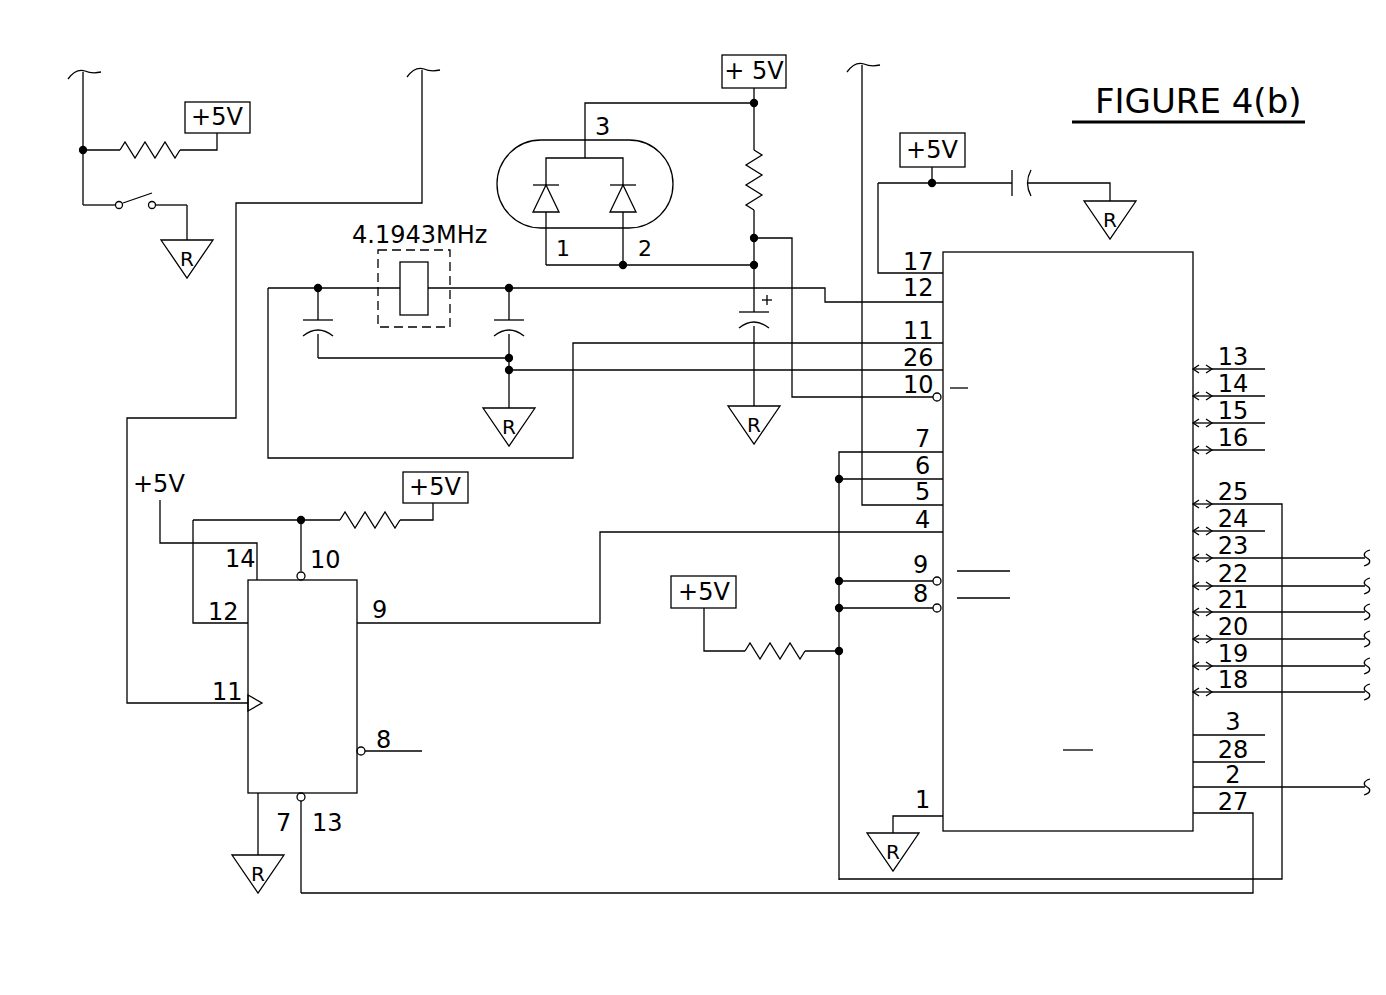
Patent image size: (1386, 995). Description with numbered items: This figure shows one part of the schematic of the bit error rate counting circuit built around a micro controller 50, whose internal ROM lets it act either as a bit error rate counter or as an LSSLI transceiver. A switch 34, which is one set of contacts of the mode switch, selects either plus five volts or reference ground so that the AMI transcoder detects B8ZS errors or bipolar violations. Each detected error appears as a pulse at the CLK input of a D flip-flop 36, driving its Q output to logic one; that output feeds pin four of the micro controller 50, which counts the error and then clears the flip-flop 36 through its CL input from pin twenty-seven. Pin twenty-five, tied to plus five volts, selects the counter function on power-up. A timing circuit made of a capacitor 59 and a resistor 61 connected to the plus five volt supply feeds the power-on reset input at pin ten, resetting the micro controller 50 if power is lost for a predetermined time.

The switch 34 is at (125, 220).
The D flip-flop 36 is at (358, 663).
The micro controller 50 is at (1148, 326).
The capacitor 59 is at (736, 317).
The resistor 61 is at (758, 152).